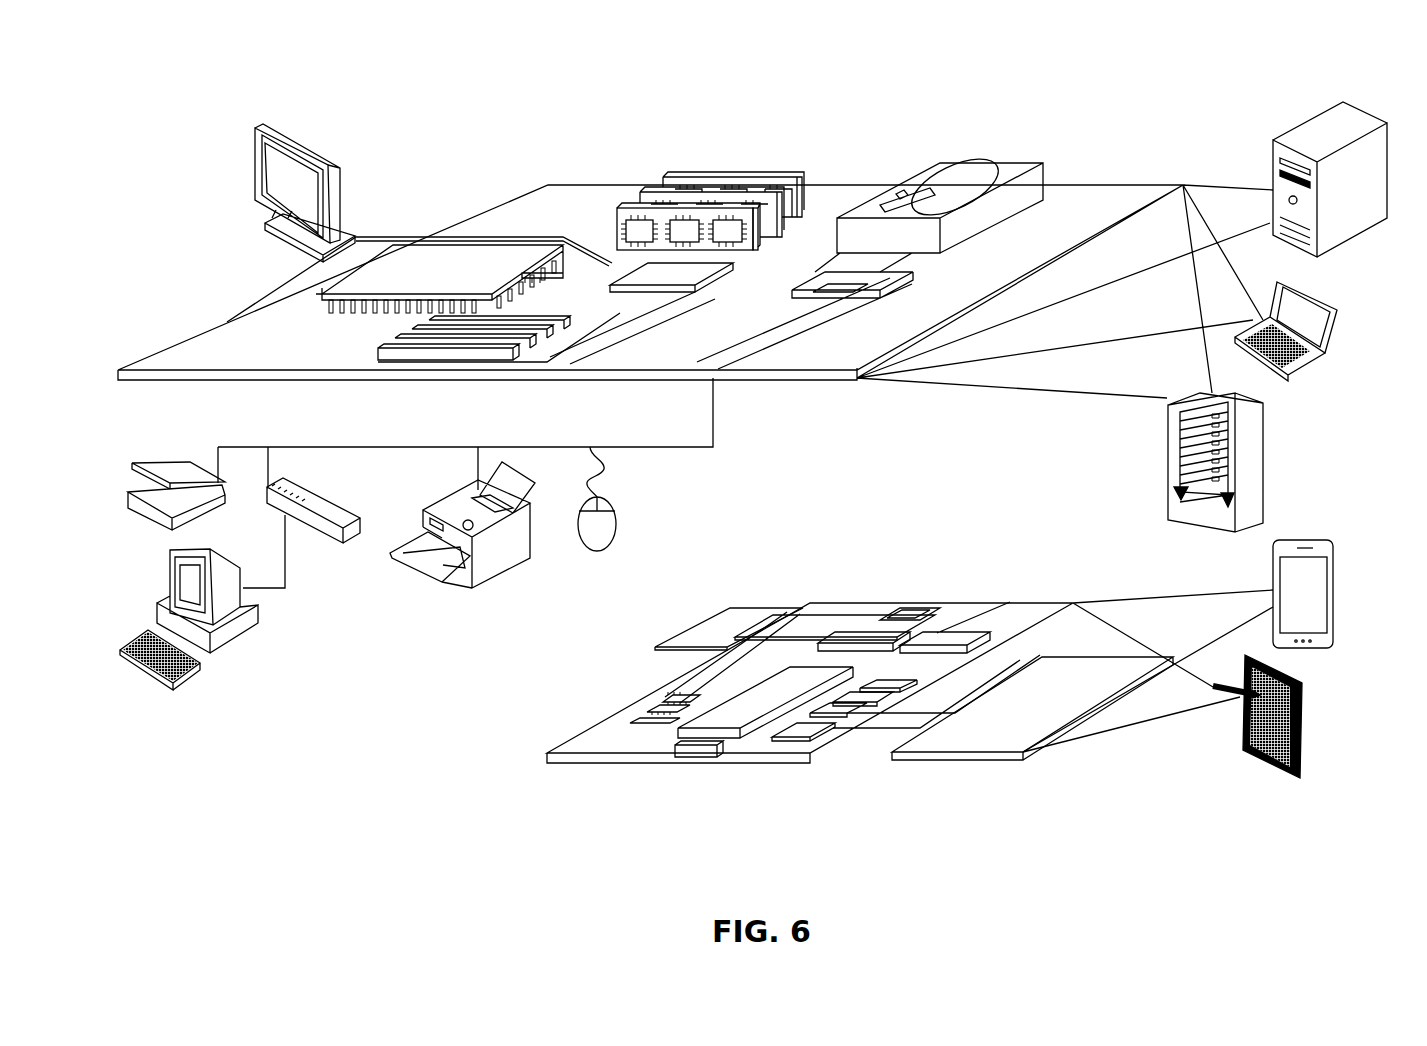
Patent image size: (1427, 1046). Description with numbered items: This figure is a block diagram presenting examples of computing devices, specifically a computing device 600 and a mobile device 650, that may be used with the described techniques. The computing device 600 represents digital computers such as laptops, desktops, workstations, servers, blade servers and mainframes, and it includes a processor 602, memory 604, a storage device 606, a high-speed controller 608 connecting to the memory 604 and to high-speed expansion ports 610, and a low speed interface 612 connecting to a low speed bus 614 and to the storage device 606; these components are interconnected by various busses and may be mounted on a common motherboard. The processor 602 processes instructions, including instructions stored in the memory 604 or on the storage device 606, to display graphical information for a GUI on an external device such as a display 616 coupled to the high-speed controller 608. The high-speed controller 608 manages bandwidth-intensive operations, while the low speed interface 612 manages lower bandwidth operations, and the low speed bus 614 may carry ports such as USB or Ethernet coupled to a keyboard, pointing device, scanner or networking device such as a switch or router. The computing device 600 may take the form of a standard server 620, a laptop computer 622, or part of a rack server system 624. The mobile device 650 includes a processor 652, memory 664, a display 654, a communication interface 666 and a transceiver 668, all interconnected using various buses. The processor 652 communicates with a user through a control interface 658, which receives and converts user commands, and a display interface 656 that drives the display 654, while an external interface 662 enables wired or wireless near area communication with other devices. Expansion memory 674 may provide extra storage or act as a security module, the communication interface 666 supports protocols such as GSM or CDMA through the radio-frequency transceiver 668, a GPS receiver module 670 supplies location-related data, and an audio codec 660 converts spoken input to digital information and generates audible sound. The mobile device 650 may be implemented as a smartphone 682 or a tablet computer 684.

The computing device 600 is at (354, 76).
The processor 602 is at (322, 290).
The memory 604 is at (677, 175).
The storage device 606 is at (927, 163).
The high-speed controller 608 is at (600, 258).
The high-speed expansion ports 610 is at (380, 345).
The low speed interface 612 is at (840, 280).
The low speed bus 614 is at (760, 375).
The display 616 is at (255, 134).
The standard server 620 is at (1260, 145).
The laptop computer 622 is at (1343, 313).
The rack server system 624 is at (1170, 488).
The mobile device 650 is at (512, 772).
The processor 652 is at (737, 723).
The display 654 is at (990, 740).
The display interface 656 is at (807, 723).
The control interface 658 is at (870, 717).
The audio codec 660 is at (877, 693).
The external interface 662 is at (790, 617).
The memory 664 is at (630, 717).
The communication interface 666 is at (863, 640).
The transceiver 668 is at (947, 640).
The GPS receiver module 670 is at (918, 570).
The expansion memory 674 is at (700, 622).
The smartphone 682 is at (1333, 568).
The tablet computer 684 is at (1253, 763).